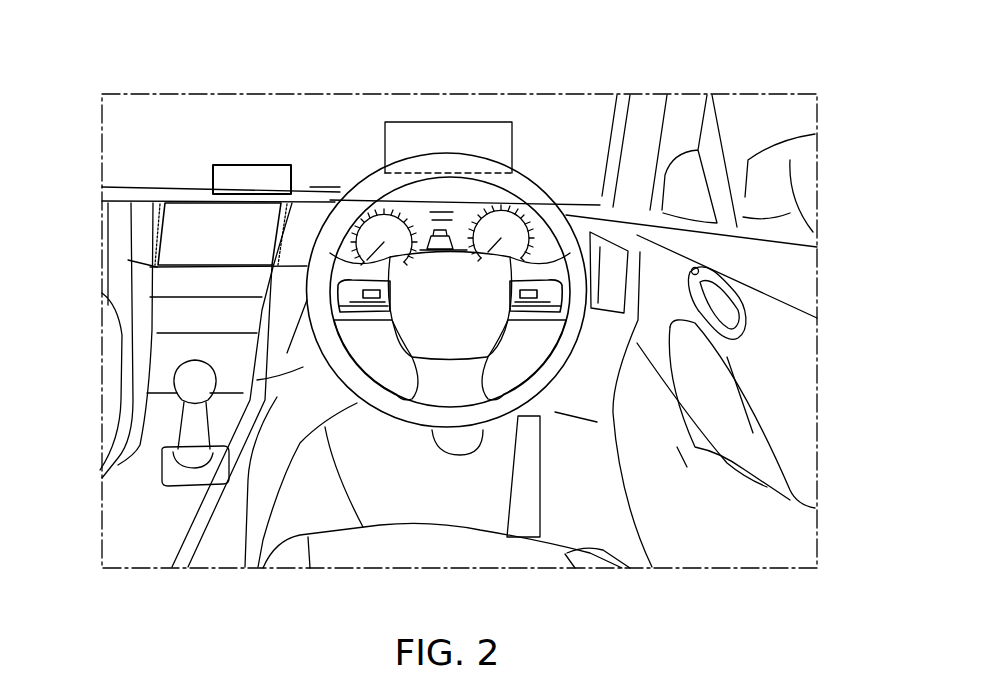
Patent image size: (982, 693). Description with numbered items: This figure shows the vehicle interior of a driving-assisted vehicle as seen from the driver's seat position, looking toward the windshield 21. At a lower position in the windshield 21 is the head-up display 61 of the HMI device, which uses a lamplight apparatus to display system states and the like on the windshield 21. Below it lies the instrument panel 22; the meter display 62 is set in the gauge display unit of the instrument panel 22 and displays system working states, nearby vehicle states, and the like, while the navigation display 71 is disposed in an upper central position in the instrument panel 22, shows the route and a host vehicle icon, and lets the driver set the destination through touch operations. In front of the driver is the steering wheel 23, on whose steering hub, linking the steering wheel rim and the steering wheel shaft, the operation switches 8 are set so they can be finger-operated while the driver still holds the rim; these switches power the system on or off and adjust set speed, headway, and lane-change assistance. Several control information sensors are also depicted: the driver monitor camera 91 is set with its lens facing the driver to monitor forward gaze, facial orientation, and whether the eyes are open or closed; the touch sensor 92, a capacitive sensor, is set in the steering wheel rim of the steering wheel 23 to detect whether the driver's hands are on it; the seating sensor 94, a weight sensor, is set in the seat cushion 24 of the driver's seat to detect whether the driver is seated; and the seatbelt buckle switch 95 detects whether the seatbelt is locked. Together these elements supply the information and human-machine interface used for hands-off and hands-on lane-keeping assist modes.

The operation switches 8 is at (528, 288).
The windshield 21 is at (338, 143).
The instrument panel 22 is at (307, 200).
The steering wheel 23 is at (561, 376).
The seat cushion 24 is at (408, 527).
The head-up display 61 is at (468, 140).
The meter display 62 is at (440, 228).
The navigation display 71 is at (190, 217).
The driver monitor camera 91 is at (252, 172).
The touch sensor 92 is at (330, 313).
The seating sensor 94 is at (480, 547).
The seatbelt buckle switch 95 is at (303, 540).